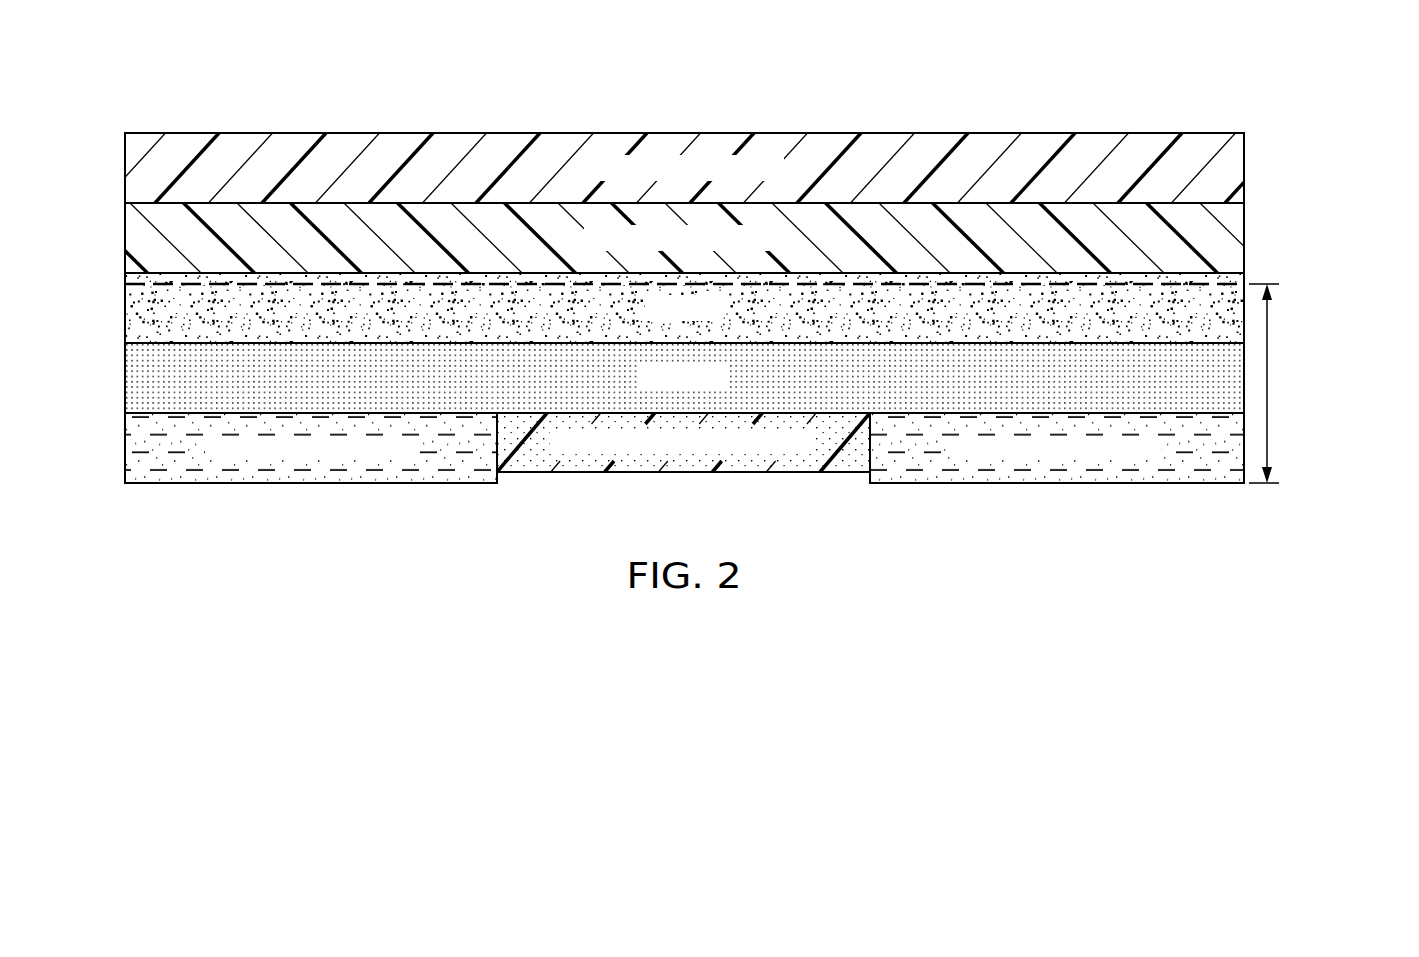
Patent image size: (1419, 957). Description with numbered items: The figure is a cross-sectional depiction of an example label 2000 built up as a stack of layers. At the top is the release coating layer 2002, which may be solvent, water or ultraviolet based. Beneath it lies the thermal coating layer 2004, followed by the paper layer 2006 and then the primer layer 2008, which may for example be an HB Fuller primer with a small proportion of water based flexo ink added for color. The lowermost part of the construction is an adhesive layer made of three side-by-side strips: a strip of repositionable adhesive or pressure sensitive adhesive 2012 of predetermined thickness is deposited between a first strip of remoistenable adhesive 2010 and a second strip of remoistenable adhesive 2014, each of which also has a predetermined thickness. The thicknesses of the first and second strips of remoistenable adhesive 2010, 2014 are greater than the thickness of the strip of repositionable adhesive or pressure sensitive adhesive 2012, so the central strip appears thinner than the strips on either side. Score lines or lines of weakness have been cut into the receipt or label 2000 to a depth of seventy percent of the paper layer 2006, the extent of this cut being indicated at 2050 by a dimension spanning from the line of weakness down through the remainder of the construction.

The label 2000 is at (522, 99).
The release coating layer 2002 is at (133, 150).
The thermal coating layer 2004 is at (133, 232).
The paper layer 2006 is at (133, 306).
The primer layer 2008 is at (133, 378).
The first strip of remoistenable adhesive 2010 is at (315, 473).
The strip of repositionable adhesive or pressure sensitive adhesive 2012 is at (682, 471).
The second strip of remoistenable adhesive 2014 is at (1083, 473).
The lines of weakness depth 2050 is at (1268, 458).